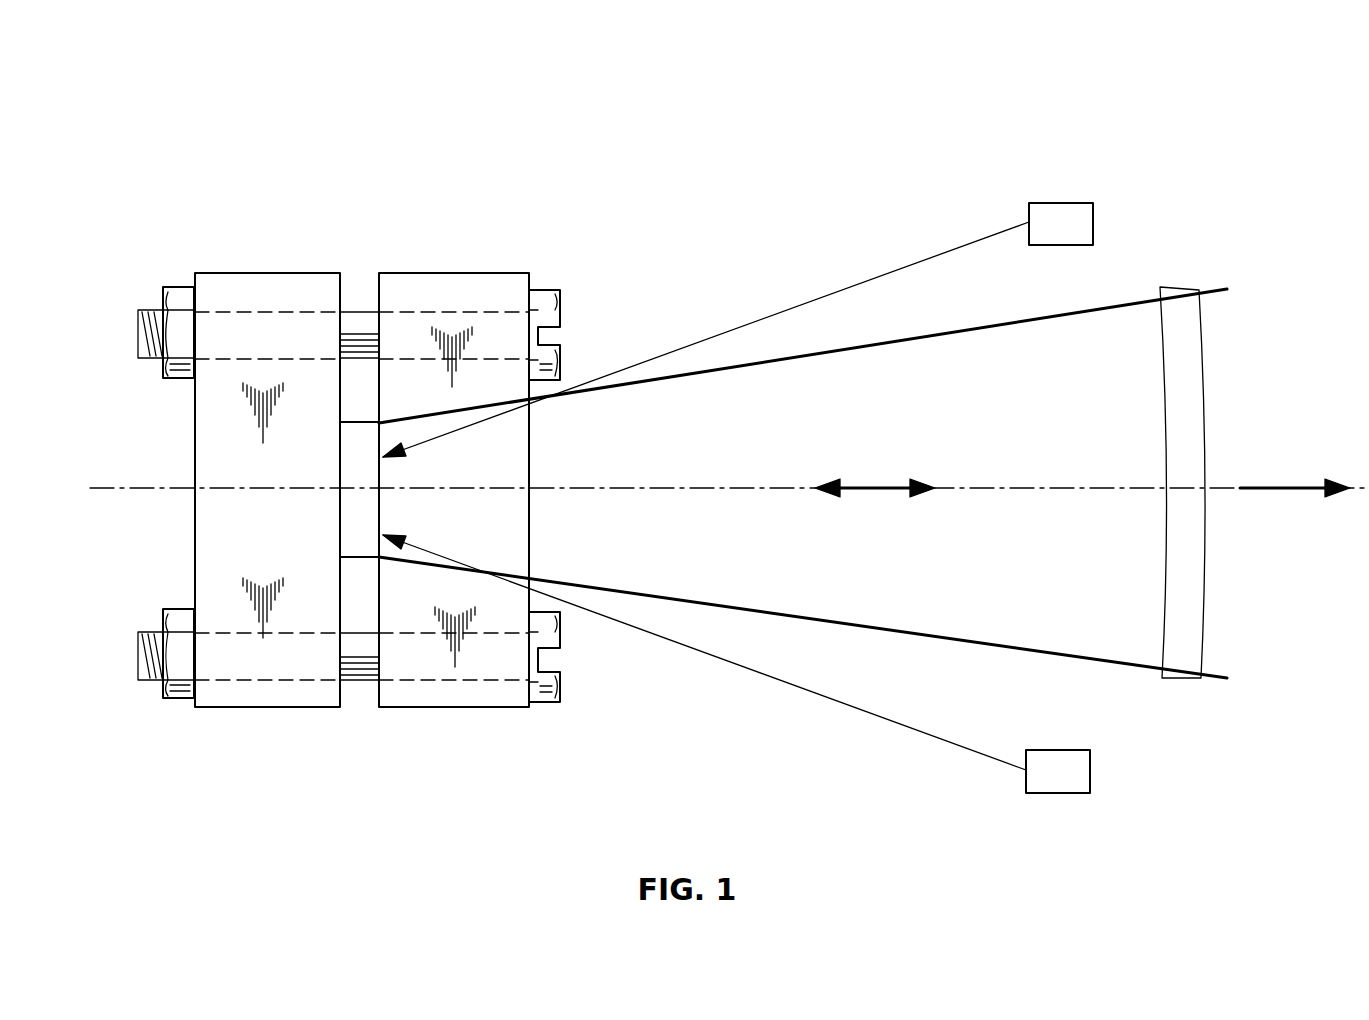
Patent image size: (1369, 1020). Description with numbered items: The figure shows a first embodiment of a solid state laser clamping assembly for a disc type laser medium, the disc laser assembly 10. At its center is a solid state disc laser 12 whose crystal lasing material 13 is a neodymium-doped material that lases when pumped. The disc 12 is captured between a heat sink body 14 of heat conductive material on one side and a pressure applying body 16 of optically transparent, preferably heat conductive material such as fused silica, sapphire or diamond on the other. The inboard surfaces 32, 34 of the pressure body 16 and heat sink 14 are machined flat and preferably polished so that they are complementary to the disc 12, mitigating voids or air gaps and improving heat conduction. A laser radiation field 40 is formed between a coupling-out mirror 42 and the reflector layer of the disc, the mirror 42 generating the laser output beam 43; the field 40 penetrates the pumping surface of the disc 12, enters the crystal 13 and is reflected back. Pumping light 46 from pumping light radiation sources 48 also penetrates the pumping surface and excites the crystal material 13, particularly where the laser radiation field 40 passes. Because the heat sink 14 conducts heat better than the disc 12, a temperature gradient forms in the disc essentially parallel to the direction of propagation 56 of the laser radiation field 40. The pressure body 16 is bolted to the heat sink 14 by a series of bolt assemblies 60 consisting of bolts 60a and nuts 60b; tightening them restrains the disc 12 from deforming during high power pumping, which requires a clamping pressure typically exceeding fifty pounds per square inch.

The disc laser assembly 10 is at (550, 212).
The solid state disc laser 12 is at (357, 557).
The crystal lasing material 13 is at (372, 505).
The heat sink body 14 is at (270, 273).
The pressure applying body 16 is at (455, 273).
The inboard surface of pressure body 32 is at (378, 502).
The inboard surface of heat sink 34 is at (340, 513).
The laser radiation field 40 is at (1028, 615).
The coupling-out mirror 42 is at (1203, 390).
The laser output beam 43 is at (1285, 492).
The pumping light 46 is at (880, 275).
The pumping light radiation source 48 is at (1093, 220).
The direction of propagation 56 is at (870, 490).
The bolt assembly 60 is at (602, 319).
The bolt 60a is at (357, 305).
The nut 60b is at (183, 288).